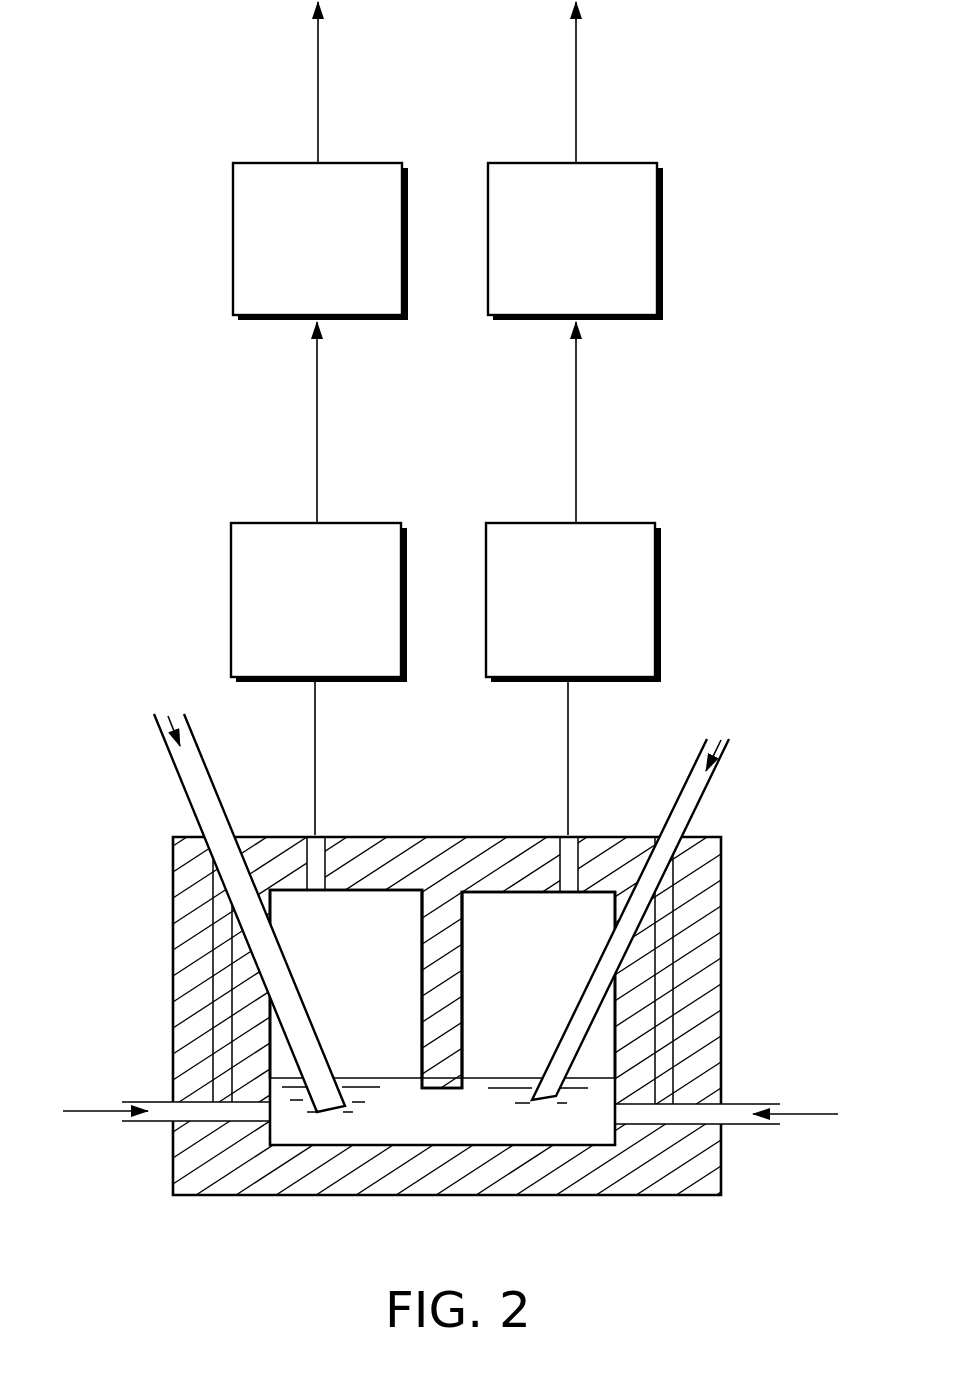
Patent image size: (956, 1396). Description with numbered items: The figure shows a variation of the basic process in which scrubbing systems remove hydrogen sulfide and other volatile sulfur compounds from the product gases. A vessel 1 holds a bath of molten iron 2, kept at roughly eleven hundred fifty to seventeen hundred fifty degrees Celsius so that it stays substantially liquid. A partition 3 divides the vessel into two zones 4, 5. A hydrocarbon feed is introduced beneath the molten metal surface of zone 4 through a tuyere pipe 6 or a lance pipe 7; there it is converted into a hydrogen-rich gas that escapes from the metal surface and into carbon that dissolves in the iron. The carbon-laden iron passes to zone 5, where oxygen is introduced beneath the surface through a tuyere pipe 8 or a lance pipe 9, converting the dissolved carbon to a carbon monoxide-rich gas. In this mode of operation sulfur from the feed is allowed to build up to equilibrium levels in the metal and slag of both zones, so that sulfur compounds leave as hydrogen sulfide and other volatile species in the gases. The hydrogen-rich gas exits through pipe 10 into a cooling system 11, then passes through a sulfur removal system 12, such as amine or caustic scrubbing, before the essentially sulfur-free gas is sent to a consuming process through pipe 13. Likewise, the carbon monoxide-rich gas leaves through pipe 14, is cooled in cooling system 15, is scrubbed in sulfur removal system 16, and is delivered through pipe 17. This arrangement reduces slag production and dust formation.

The vessel 1 is at (487, 1182).
The molten iron 2 is at (357, 1078).
The partition 3 is at (462, 1013).
The zone 4 is at (338, 962).
The zone 5 is at (529, 962).
The tuyere pipe 6 is at (160, 1123).
The lance pipe 7 is at (181, 712).
The tuyere pipe 8 is at (740, 1126).
The lance pipe 9 is at (720, 735).
The pipe 10 is at (315, 737).
The cooling system 11 is at (300, 611).
The sulfur removal system 12 is at (304, 249).
The pipe 13 is at (318, 66).
The pipe 14 is at (568, 738).
The cooling system 15 is at (555, 611).
The sulfur removal system 16 is at (556, 249).
The pipe 17 is at (576, 62).